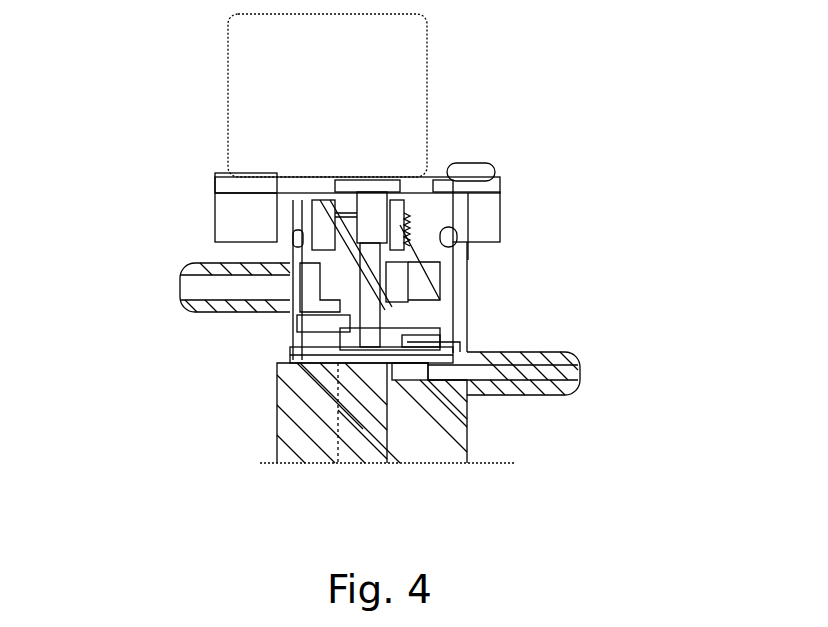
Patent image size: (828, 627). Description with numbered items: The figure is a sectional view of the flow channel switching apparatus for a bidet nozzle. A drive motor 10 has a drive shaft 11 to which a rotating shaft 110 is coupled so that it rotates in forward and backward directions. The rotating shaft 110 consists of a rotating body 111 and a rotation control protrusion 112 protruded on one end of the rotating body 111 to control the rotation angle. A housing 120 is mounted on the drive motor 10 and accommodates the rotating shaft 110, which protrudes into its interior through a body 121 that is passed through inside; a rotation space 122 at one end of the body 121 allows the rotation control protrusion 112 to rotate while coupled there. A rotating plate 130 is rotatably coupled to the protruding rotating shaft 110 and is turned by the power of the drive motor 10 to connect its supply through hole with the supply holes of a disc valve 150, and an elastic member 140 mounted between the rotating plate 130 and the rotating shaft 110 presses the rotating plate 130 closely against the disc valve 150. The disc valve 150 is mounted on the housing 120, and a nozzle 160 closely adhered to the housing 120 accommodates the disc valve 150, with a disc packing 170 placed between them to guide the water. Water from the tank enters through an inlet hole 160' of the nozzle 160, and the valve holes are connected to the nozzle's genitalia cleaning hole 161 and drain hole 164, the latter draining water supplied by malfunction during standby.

The drive motor 10 is at (240, 88).
The drive shaft 11 is at (407, 193).
The rotating shaft 110 is at (404, 210).
The rotating body 111 is at (388, 277).
The rotation control protrusion 112 is at (307, 193).
The housing 120 is at (291, 252).
The body 121 is at (290, 219).
The rotation space 122 is at (410, 240).
The rotating plate 130 is at (293, 325).
The elastic member 140 is at (403, 296).
The disc valve 150 is at (293, 343).
The nozzle 160 is at (347, 413).
The inlet hole 160' is at (184, 287).
The genitalia cleaning hole 161 is at (338, 422).
The drain hole 164 is at (403, 345).
The disc packing 170 is at (325, 360).